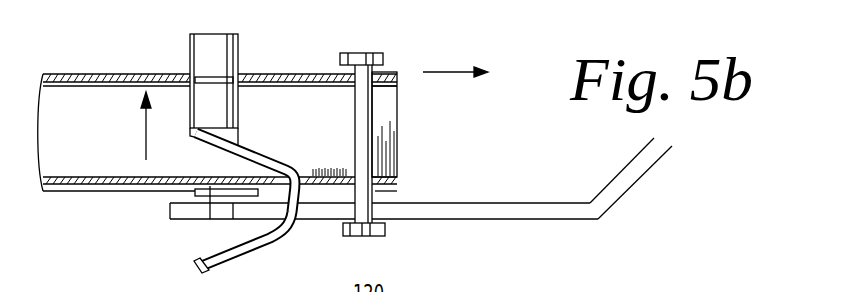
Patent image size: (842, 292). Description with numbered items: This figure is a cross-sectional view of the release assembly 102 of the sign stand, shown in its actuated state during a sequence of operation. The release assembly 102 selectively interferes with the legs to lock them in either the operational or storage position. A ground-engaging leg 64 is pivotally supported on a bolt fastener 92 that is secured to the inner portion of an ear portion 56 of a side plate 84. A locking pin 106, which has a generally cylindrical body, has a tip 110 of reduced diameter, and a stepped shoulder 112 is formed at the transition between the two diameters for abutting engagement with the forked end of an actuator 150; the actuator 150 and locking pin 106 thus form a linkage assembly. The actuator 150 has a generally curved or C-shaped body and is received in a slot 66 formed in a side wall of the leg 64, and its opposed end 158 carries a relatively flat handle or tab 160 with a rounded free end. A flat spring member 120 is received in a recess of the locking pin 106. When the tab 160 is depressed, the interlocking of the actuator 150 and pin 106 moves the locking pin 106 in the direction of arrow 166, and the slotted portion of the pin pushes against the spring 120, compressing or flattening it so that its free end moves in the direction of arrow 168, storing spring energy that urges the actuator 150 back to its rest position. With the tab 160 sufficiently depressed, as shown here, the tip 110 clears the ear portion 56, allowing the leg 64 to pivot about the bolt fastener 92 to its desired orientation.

The ear portion 56 is at (170, 214).
The ground-engaging leg 64 is at (382, 108).
The slot 66 is at (277, 218).
The side plate 84 is at (613, 182).
The bolt fastener 92 is at (382, 58).
The release assembly 102 is at (153, 47).
The locking pin 106 is at (228, 44).
The tip 110 is at (210, 186).
The shoulder 112 is at (236, 133).
The spring member 120 is at (114, 87).
The actuator 150 is at (268, 157).
The opposed end 158 is at (298, 166).
The tab 160 is at (229, 262).
The arrow 166 is at (145, 140).
The arrow 168 is at (385, 78).